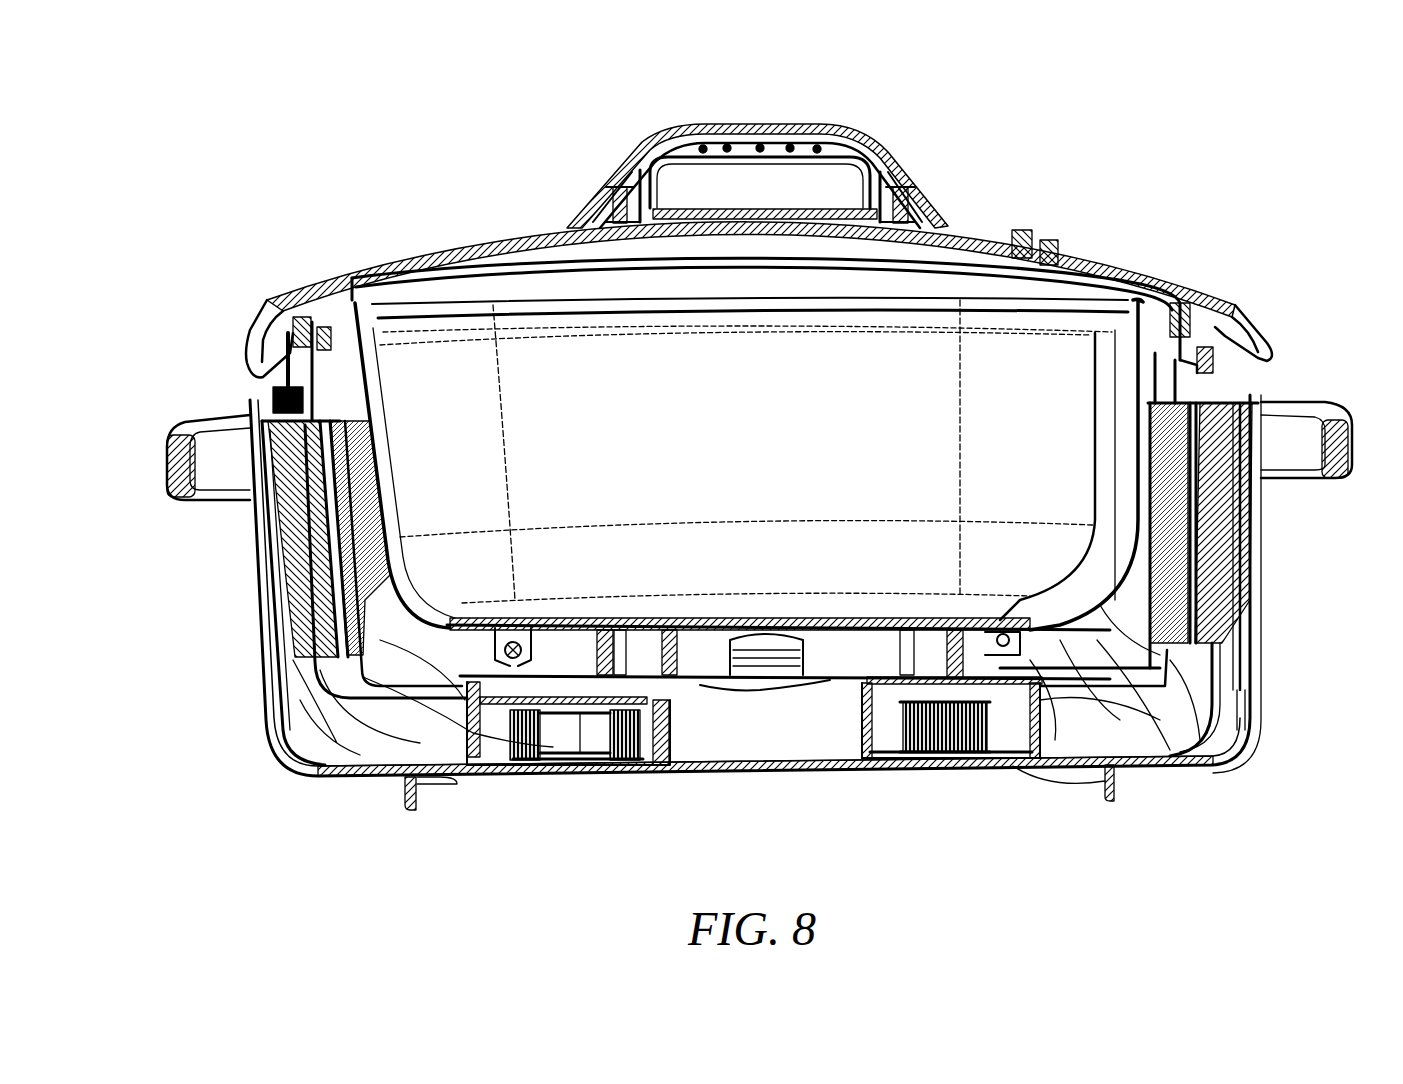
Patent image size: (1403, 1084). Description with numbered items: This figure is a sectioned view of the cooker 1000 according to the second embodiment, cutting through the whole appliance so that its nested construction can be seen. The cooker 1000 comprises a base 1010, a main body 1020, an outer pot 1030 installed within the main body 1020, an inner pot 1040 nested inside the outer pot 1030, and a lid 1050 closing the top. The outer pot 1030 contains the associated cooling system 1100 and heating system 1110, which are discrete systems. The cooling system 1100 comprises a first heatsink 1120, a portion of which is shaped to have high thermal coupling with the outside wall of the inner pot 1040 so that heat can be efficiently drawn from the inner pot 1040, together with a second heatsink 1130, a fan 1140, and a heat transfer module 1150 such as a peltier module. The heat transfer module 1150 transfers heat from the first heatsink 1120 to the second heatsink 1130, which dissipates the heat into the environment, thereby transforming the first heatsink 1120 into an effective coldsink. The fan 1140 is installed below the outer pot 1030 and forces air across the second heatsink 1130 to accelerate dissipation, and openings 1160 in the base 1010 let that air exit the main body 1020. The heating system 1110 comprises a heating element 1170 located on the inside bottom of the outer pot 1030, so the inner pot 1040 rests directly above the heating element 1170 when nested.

The cooker 1000 is at (1182, 114).
The base 1010 is at (1220, 760).
The main body 1020 is at (1262, 574).
The outer pot 1030 is at (1243, 733).
The inner pot 1040 is at (1097, 367).
The lid 1050 is at (1088, 303).
The cooling system 1100 is at (315, 568).
The heating system 1110 is at (742, 680).
The first heatsink 1120 is at (340, 642).
The second heatsink 1130 is at (303, 543).
The fan 1140 is at (587, 733).
The heat transfer module 1150 is at (360, 597).
The openings 1160 is at (603, 760).
The heating element 1170 is at (505, 652).